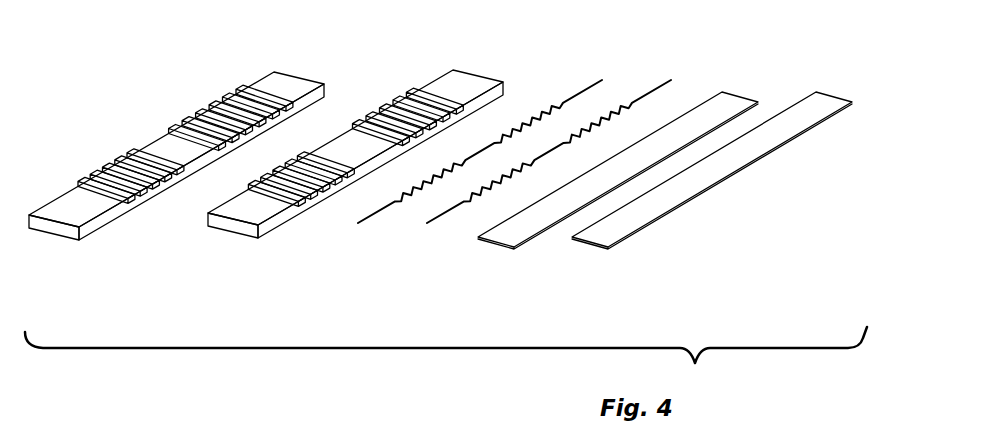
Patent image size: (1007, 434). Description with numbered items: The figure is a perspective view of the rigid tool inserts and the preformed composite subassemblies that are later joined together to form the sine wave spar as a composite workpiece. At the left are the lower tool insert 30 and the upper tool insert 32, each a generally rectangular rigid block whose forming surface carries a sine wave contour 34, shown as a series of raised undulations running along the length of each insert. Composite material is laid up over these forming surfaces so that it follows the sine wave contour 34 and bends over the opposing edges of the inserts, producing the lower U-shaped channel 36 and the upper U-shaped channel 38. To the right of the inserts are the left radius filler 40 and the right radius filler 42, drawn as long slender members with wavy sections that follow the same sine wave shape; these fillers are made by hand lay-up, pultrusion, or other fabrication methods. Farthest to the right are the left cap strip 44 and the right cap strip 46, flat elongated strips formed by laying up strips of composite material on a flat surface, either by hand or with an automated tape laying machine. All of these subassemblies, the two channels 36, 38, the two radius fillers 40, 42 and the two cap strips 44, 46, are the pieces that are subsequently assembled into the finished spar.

The lower tool insert 30 is at (176, 199).
The upper tool insert 32 is at (345, 154).
The sine wave contour 34 is at (207, 108).
The lower U-shaped channel 36 is at (78, 213).
The upper U-shaped channel 38 is at (460, 80).
The left radius filler 40 is at (587, 87).
The right radius filler 42 is at (652, 87).
The left cap strip 44 is at (740, 94).
The right cap strip 46 is at (838, 92).